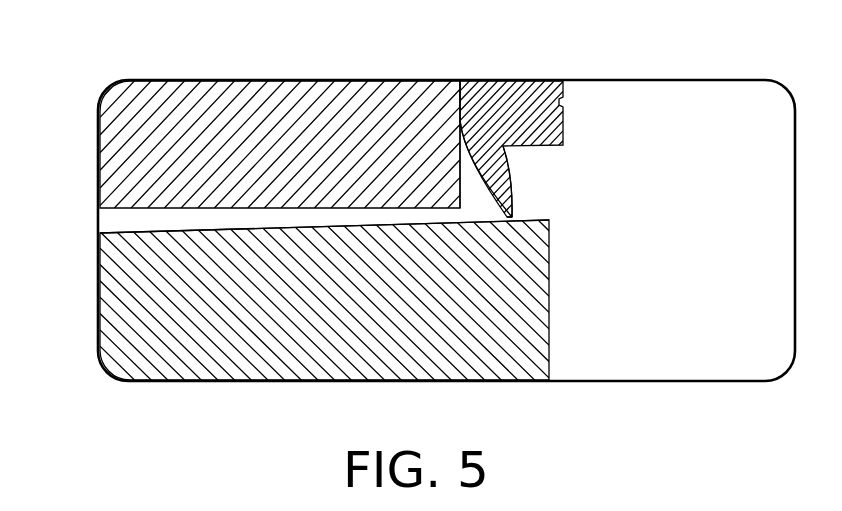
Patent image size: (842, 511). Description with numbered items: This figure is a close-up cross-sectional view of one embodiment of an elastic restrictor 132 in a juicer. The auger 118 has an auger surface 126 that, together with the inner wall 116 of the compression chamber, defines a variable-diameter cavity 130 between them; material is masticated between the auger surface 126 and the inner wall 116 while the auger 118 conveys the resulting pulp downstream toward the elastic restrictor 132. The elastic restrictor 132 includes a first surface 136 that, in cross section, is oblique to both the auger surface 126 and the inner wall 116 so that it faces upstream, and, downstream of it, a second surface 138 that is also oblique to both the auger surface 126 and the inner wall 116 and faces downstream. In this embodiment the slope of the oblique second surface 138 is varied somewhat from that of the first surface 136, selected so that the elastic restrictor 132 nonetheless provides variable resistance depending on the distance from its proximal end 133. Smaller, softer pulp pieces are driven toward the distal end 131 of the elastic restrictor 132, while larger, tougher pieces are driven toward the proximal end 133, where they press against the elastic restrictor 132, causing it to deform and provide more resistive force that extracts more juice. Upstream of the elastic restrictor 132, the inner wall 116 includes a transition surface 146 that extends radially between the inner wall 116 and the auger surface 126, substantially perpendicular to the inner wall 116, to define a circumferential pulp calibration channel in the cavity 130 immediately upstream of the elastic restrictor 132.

The inner wall 116 is at (292, 211).
The auger 118 is at (125, 277).
The auger surface 126 is at (242, 228).
The cavity 130 is at (143, 222).
The distal end 131 is at (511, 246).
The elastic restrictor 132 is at (512, 80).
The proximal end 133 is at (527, 158).
The first surface 136 is at (507, 217).
The second surface 138 is at (513, 180).
The transition surface 146 is at (476, 190).